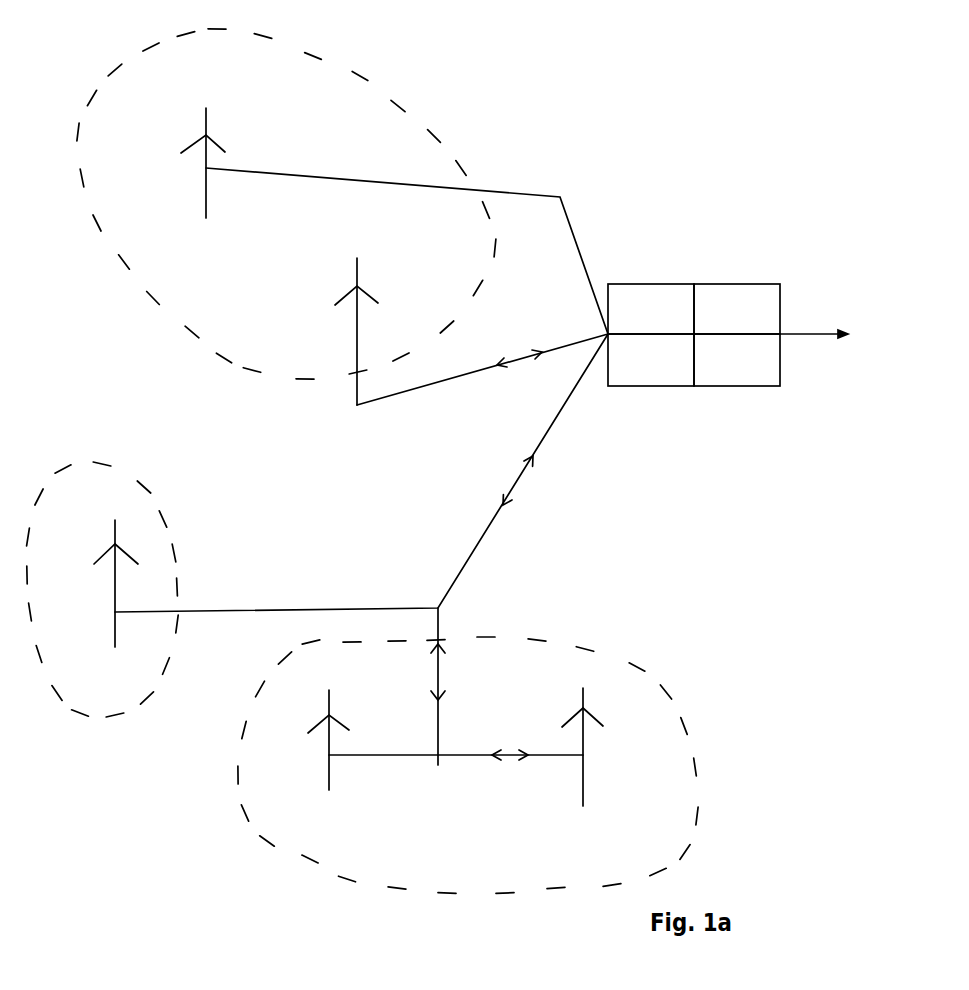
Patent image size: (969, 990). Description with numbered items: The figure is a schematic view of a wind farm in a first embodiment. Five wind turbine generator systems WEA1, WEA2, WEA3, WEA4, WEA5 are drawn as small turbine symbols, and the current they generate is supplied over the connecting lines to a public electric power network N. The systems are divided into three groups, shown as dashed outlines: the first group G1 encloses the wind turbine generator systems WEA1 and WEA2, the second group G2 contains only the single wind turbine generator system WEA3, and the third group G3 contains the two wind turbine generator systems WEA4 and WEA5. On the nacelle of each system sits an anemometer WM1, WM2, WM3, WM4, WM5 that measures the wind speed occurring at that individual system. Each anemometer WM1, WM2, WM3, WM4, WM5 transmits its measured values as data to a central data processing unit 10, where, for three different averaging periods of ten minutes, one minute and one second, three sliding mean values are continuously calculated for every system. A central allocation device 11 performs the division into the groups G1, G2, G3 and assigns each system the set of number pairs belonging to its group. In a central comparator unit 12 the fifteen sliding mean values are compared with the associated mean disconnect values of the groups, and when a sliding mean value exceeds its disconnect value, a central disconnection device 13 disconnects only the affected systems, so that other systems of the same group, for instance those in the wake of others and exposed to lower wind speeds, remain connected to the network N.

The central data processing unit 10 is at (651, 309).
The central allocation device 11 is at (737, 309).
The central comparator unit 12 is at (651, 360).
The central disconnection device 13 is at (737, 360).
The public electric power network N is at (836, 334).
The first group G1 is at (286, 197).
The second group G2 is at (103, 608).
The third group G3 is at (507, 765).
The first wind turbine generator system WEA1 is at (201, 155).
The second wind turbine generator system WEA2 is at (350, 329).
The third wind turbine generator system WEA3 is at (95, 590).
The fourth wind turbine generator system WEA4 is at (322, 751).
The fifth wind turbine generator system WEA5 is at (607, 768).
The anemometer WM1 is at (175, 137).
The anemometer WM2 is at (320, 280).
The anemometer WM3 is at (95, 530).
The anemometer WM4 is at (320, 699).
The anemometer WM5 is at (603, 704).